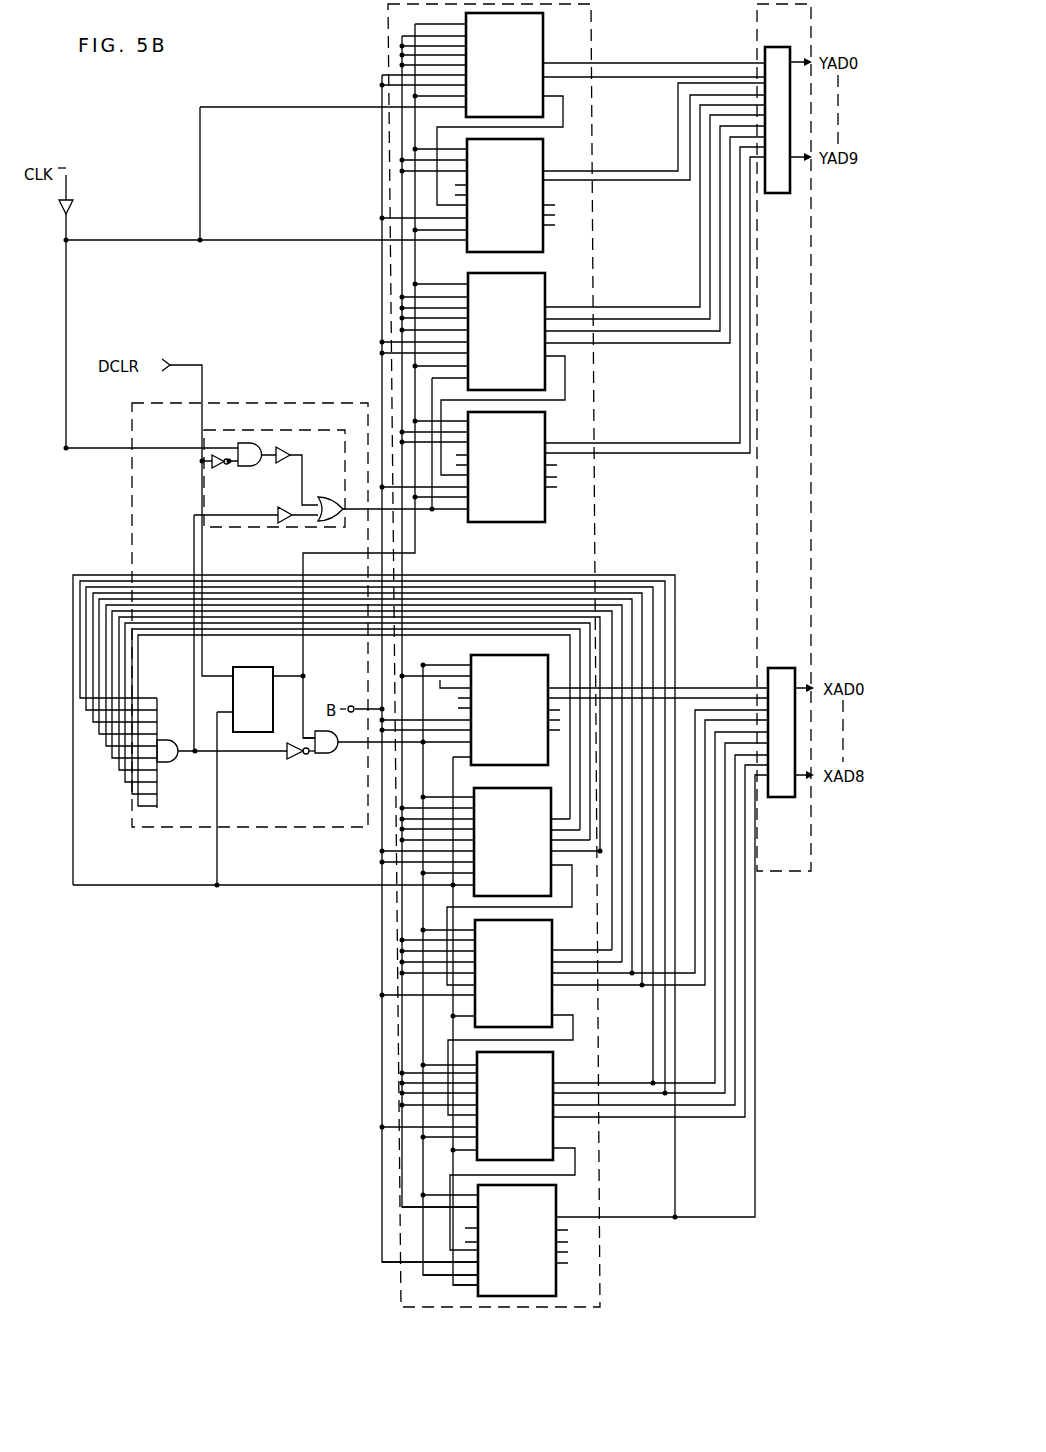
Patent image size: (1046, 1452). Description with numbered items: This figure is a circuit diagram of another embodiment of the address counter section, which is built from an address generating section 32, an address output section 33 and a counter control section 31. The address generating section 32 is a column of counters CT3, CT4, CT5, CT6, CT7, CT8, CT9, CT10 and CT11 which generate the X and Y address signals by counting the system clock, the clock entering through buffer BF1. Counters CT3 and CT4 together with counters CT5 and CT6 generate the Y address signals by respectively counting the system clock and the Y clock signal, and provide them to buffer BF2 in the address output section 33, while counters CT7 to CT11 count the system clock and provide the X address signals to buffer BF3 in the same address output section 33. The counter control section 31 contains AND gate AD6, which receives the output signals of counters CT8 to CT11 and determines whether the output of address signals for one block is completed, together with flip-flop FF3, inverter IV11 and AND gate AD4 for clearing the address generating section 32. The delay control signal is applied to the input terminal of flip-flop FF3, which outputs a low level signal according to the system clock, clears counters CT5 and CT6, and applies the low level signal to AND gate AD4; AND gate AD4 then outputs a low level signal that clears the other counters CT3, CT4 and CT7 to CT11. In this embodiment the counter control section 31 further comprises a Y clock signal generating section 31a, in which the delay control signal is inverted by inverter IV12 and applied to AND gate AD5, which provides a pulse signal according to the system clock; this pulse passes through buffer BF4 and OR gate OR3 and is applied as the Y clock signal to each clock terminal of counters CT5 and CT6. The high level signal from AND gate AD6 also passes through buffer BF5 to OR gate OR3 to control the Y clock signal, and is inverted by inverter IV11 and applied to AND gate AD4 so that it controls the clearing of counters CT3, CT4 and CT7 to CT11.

The counter CT3 is at (543, 30).
The counter CT4 is at (543, 240).
The counter CT5 is at (545, 293).
The counter CT6 is at (545, 500).
The counter CT7 is at (481, 654).
The counter CT8 is at (496, 786).
The counter CT9 is at (552, 938).
The counter CT10 is at (553, 1073).
The counter CT11 is at (576, 1187).
The buffer BF1 is at (73, 207).
The buffer BF2 is at (777, 193).
The buffer BF3 is at (783, 668).
The buffer BF4 is at (286, 449).
The buffer BF5 is at (284, 507).
The OR gate OR3 is at (330, 497).
The AND gate AD4 is at (330, 753).
The AND gate AD5 is at (255, 466).
The AND gate AD6 is at (178, 758).
The inverter IV11 is at (296, 759).
The inverter IV12 is at (218, 468).
The flip-flop FF3 is at (246, 732).
The counter control section 31 is at (250, 828).
The Y clock signal generating section 31a is at (231, 527).
The address generating section 32 is at (591, 12).
The address output section 33 is at (757, 538).